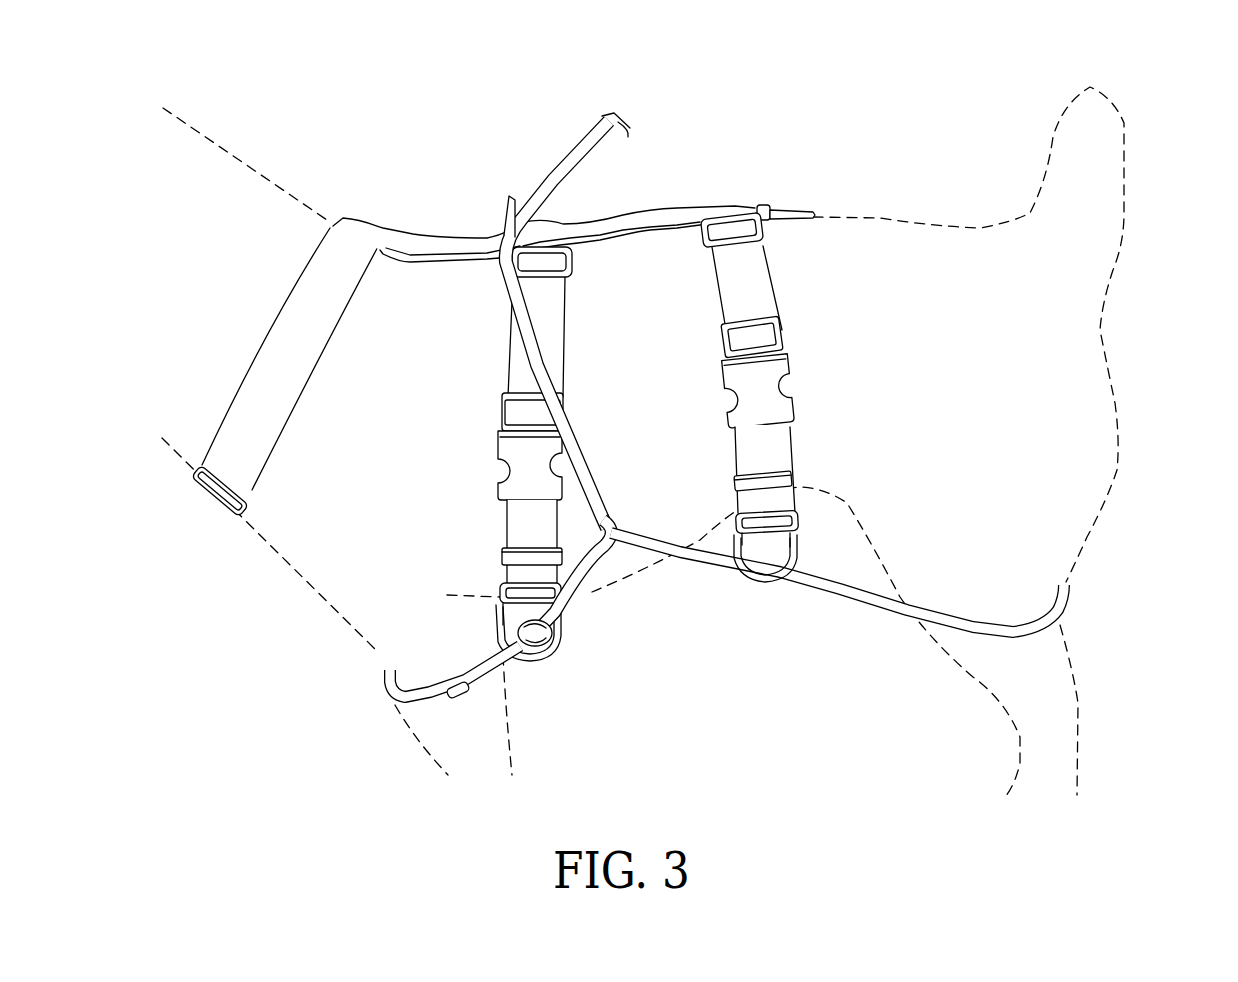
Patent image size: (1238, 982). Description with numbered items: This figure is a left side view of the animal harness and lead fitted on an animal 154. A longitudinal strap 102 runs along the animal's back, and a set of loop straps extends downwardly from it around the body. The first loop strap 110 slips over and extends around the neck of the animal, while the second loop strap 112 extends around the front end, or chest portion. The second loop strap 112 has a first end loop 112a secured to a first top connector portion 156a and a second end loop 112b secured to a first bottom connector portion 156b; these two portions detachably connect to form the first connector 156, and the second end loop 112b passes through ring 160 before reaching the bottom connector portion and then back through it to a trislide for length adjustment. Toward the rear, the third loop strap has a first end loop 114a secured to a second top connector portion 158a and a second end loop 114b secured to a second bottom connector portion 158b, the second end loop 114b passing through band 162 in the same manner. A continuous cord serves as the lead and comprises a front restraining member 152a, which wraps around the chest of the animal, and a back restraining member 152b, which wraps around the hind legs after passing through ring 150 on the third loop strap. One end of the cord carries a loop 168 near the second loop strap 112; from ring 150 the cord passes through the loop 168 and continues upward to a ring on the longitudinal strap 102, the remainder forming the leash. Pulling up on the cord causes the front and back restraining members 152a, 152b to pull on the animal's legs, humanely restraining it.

The longitudinal strap 102 is at (640, 211).
The first loop strap 110 is at (280, 370).
The second loop strap 112 is at (547, 308).
The first end loop 112a is at (520, 412).
The second end loop 112b is at (523, 517).
The first end loop 114a is at (763, 338).
The second end loop 114b is at (752, 443).
The ring 150 is at (770, 582).
The front restraining member 152a is at (383, 690).
The back restraining member 152b is at (1065, 612).
The animal 154 is at (1102, 218).
The first connector 156 is at (538, 445).
The first top connector portion 156a is at (560, 397).
The first bottom connector portion 156b is at (550, 487).
The second top connector portion 158a is at (760, 320).
The second bottom connector portion 158b is at (778, 412).
The ring 160 is at (500, 552).
The band 162 is at (787, 480).
The loop 168 is at (577, 625).